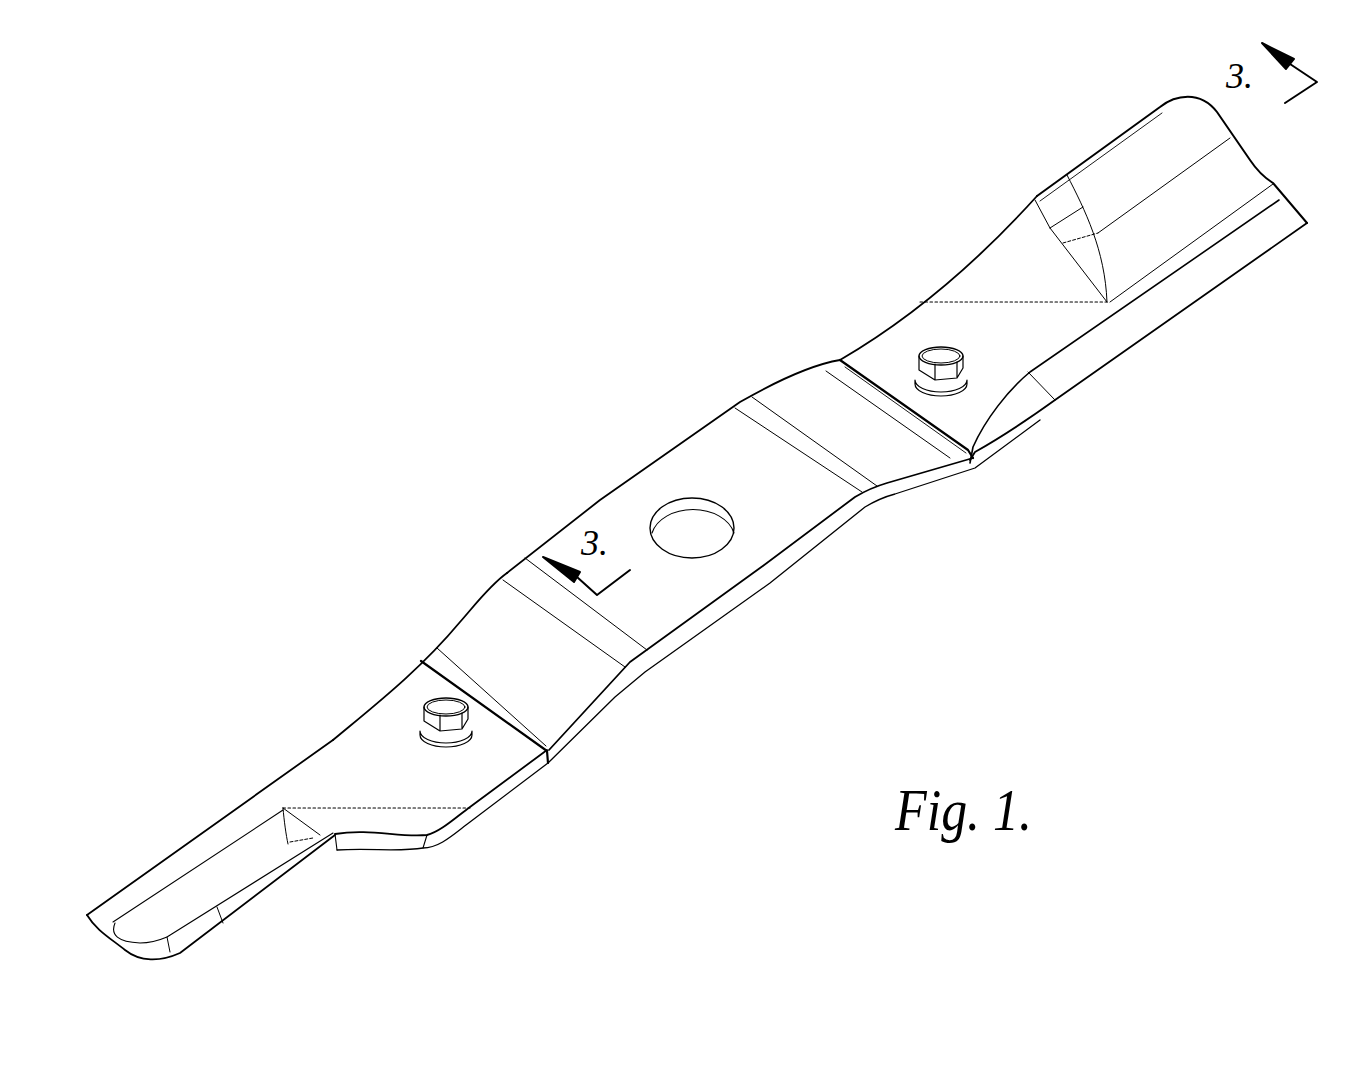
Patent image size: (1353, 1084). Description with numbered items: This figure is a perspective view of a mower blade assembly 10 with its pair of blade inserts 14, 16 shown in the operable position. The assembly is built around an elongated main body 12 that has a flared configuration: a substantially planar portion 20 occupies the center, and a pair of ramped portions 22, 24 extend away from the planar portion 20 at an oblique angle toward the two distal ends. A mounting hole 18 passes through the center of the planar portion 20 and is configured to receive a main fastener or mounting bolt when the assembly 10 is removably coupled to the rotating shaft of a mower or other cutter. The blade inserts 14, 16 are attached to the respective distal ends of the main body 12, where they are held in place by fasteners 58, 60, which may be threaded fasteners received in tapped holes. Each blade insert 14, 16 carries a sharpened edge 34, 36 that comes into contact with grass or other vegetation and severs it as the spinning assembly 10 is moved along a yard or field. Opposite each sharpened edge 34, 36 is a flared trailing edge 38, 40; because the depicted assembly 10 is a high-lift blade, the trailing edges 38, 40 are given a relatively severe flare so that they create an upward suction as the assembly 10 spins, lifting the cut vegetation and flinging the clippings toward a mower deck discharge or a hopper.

The mower blade assembly 10 is at (462, 366).
The main body 12 is at (695, 450).
The blade insert 14 is at (995, 262).
The blade insert 16 is at (350, 768).
The mounting hole 18 is at (735, 530).
The planar portion 20 is at (620, 497).
The ramped portion 22 is at (806, 390).
The ramped portion 24 is at (590, 690).
The sharpened edge 34 is at (1200, 272).
The sharpened edge 36 is at (193, 848).
The trailing edge 38 is at (1125, 145).
The trailing edge 40 is at (267, 880).
The fastener 58 is at (945, 358).
The fastener 60 is at (440, 708).